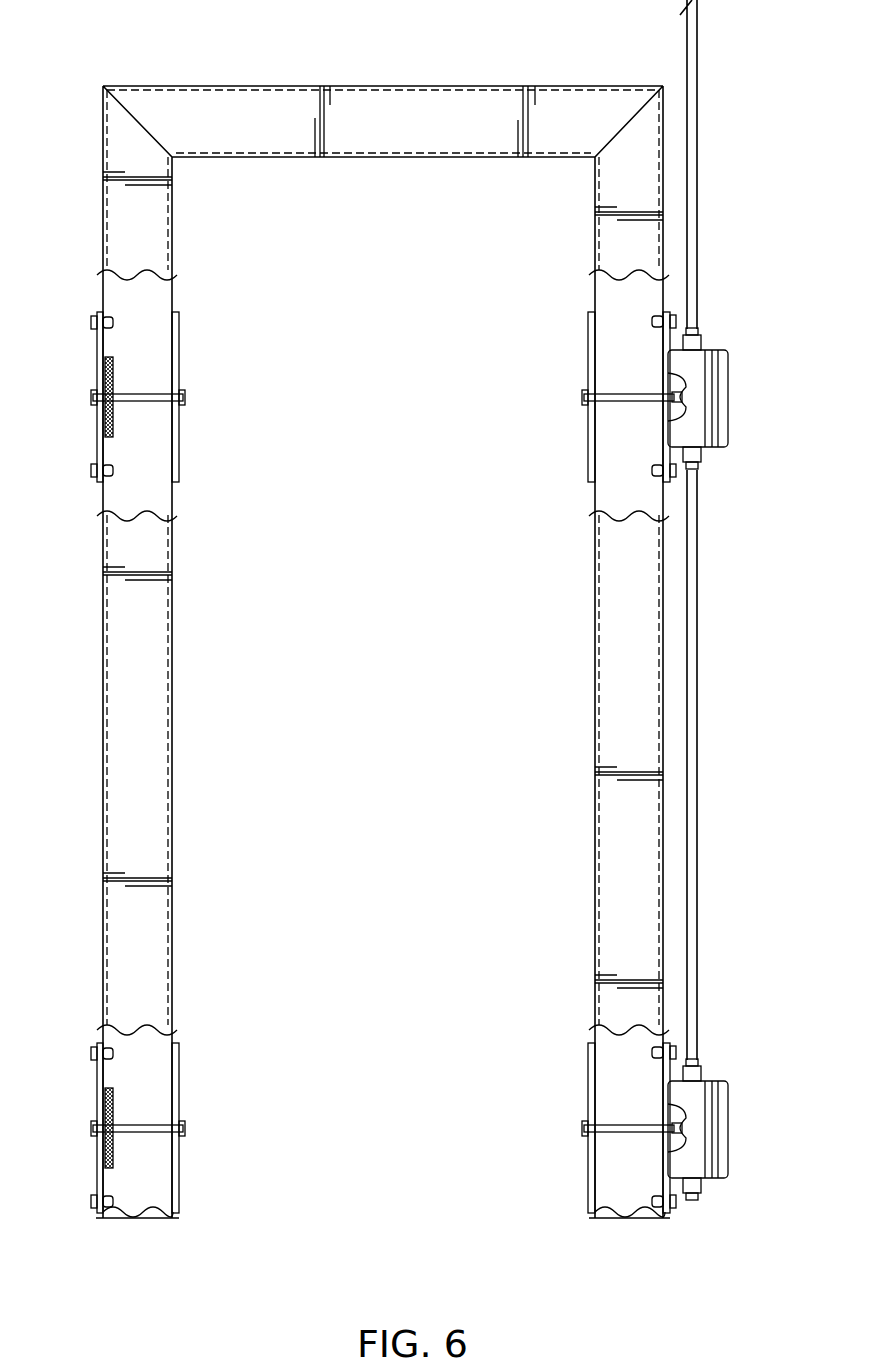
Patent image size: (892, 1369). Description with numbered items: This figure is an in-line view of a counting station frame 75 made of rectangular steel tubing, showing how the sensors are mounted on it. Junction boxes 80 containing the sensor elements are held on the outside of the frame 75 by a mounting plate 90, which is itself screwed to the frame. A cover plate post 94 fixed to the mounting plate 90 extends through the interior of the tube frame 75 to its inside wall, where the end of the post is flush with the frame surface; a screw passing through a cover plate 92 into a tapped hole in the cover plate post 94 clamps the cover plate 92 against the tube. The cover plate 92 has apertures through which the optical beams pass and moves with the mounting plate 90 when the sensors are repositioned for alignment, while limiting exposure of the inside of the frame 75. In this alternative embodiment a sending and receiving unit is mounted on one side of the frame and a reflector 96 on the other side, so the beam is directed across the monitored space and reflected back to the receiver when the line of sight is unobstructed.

The frame 75 is at (596, 858).
The junction box 80 is at (730, 392).
The mounting plate 90 is at (665, 1172).
The cover plate 92 is at (590, 1180).
The cover plate post 94 is at (620, 1122).
The reflector 96 is at (113, 1153).